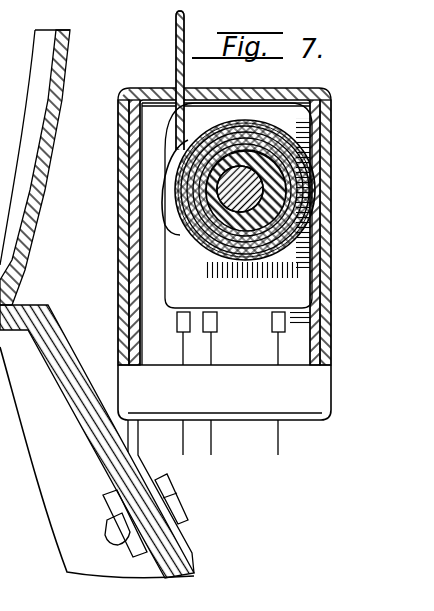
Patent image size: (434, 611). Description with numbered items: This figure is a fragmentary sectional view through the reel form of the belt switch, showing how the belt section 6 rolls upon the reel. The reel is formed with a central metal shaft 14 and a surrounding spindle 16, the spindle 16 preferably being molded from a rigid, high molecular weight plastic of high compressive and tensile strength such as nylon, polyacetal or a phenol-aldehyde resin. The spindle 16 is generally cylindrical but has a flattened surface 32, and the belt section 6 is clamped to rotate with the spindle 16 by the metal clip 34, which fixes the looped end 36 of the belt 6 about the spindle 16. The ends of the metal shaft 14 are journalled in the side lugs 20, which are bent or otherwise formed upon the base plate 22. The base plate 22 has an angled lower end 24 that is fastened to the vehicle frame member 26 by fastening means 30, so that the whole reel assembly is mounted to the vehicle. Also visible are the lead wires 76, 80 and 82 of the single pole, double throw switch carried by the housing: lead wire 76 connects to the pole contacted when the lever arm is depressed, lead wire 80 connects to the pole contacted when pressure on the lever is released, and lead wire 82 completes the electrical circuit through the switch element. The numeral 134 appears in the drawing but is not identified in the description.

The belt section 6 is at (176, 37).
The metal shaft 14 is at (262, 184).
The spindle 16 is at (262, 212).
The side lugs 20 is at (163, 260).
The base plate 22 is at (133, 242).
The angled lower end 24 is at (143, 470).
The vehicle frame member 26 is at (115, 467).
The fastening means 30 is at (177, 508).
The flattened surface 32 is at (213, 168).
The metal clip 34 is at (318, 154).
The looped end 36 is at (243, 160).
The lead wire 76 is at (183, 347).
The lead wire 80 is at (211, 347).
The lead wire 82 is at (278, 353).
The coil winding 134 is at (224, 138).